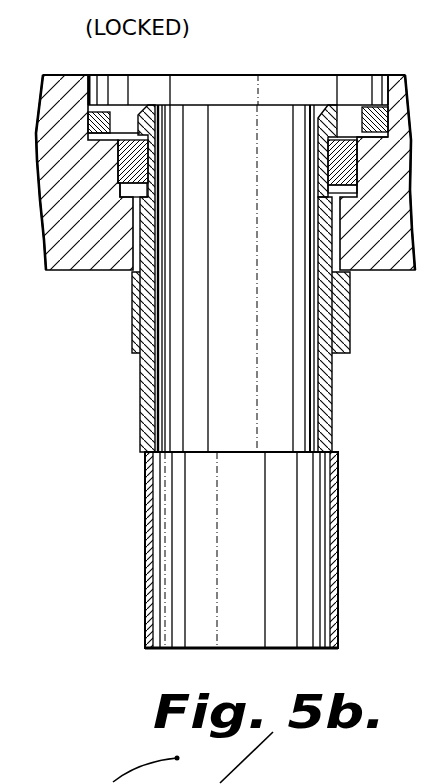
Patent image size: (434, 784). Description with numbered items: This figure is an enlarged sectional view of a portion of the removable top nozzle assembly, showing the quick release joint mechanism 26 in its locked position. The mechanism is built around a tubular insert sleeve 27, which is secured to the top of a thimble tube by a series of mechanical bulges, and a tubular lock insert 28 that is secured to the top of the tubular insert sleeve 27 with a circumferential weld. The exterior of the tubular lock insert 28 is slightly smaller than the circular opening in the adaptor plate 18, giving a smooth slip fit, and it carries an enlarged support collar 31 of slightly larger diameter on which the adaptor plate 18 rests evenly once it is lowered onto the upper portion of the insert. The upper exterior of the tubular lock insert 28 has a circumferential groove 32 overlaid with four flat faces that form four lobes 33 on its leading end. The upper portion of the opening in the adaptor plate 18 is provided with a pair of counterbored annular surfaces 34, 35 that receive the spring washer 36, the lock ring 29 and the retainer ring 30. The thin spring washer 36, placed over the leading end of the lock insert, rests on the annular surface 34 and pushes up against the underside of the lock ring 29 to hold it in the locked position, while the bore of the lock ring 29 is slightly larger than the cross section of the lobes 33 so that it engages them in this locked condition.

The adaptor plate 18 is at (63, 82).
The quick release joint mechanism 26 is at (253, 361).
The tubular insert sleeve 27 is at (336, 520).
The tubular lock insert 28 is at (331, 390).
The lock ring 29 is at (136, 160).
The retainer ring 30 is at (88, 121).
The support collar 31 is at (347, 296).
The circumferential groove 32 is at (330, 167).
The lobes 33 is at (350, 162).
The counterbored annular surface 34 is at (352, 192).
The counterbored annular surface 35 is at (369, 124).
The spring washer 36 is at (127, 192).